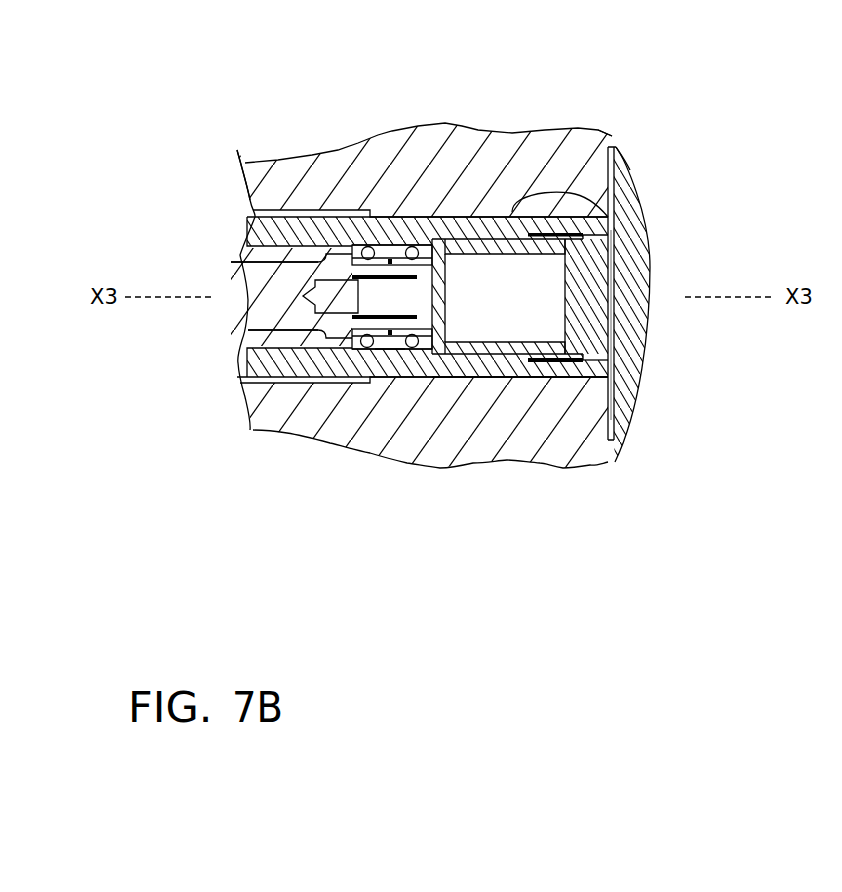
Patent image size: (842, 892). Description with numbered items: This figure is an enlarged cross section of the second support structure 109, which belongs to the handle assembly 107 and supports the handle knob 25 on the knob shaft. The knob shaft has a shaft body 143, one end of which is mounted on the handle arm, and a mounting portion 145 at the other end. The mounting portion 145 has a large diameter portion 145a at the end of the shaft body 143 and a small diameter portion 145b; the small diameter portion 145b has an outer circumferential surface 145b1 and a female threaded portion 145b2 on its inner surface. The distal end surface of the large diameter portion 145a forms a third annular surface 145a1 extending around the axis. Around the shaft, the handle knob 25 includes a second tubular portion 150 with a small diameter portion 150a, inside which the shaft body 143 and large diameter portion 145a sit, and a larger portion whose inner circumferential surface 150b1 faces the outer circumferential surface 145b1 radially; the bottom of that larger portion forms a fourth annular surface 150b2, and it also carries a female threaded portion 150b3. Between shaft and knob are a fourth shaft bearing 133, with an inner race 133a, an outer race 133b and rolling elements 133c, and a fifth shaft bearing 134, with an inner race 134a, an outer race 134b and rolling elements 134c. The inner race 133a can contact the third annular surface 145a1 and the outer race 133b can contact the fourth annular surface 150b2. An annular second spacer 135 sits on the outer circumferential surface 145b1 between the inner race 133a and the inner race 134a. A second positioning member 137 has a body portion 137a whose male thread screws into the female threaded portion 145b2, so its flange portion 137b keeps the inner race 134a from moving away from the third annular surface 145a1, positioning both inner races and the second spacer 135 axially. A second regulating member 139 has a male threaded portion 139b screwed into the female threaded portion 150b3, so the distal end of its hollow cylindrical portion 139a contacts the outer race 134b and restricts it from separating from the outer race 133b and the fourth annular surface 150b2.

The second tubular portion 150 is at (502, 205).
The small diameter portion 150a is at (302, 383).
The inner circumferential surface 150b1 is at (613, 460).
The fourth annular surface 150b2 is at (256, 240).
The female threaded portion 150b3 is at (633, 410).
The second regulating member 139 is at (662, 178).
The hollow cylindrical portion 139a is at (618, 205).
The male threaded portion 139b is at (650, 253).
The second positioning member 137 is at (760, 318).
The body portion 137a is at (455, 299).
The flange portion 137b is at (455, 321).
The mounting portion 145 is at (418, 52).
The large diameter portion 145a is at (342, 246).
The third annular surface 145a1 is at (313, 340).
The small diameter portion 145b is at (402, 248).
The outer circumferential surface 145b1 is at (435, 250).
The female threaded portion 145b2 is at (476, 220).
The shaft body 143 is at (268, 302).
The second spacer 135 is at (250, 430).
The fourth shaft bearing 133 is at (475, 517).
The inner race 133a is at (400, 350).
The outer race 133b is at (350, 350).
The rolling elements 133c is at (387, 350).
The fifth shaft bearing 134 is at (655, 551).
The inner race 134a is at (556, 378).
The outer race 134b is at (462, 378).
The rolling elements 134c is at (510, 378).
The second support structure 109 is at (268, 128).
The handle assembly 107 is at (618, 93).
The handle knob 25 is at (634, 146).